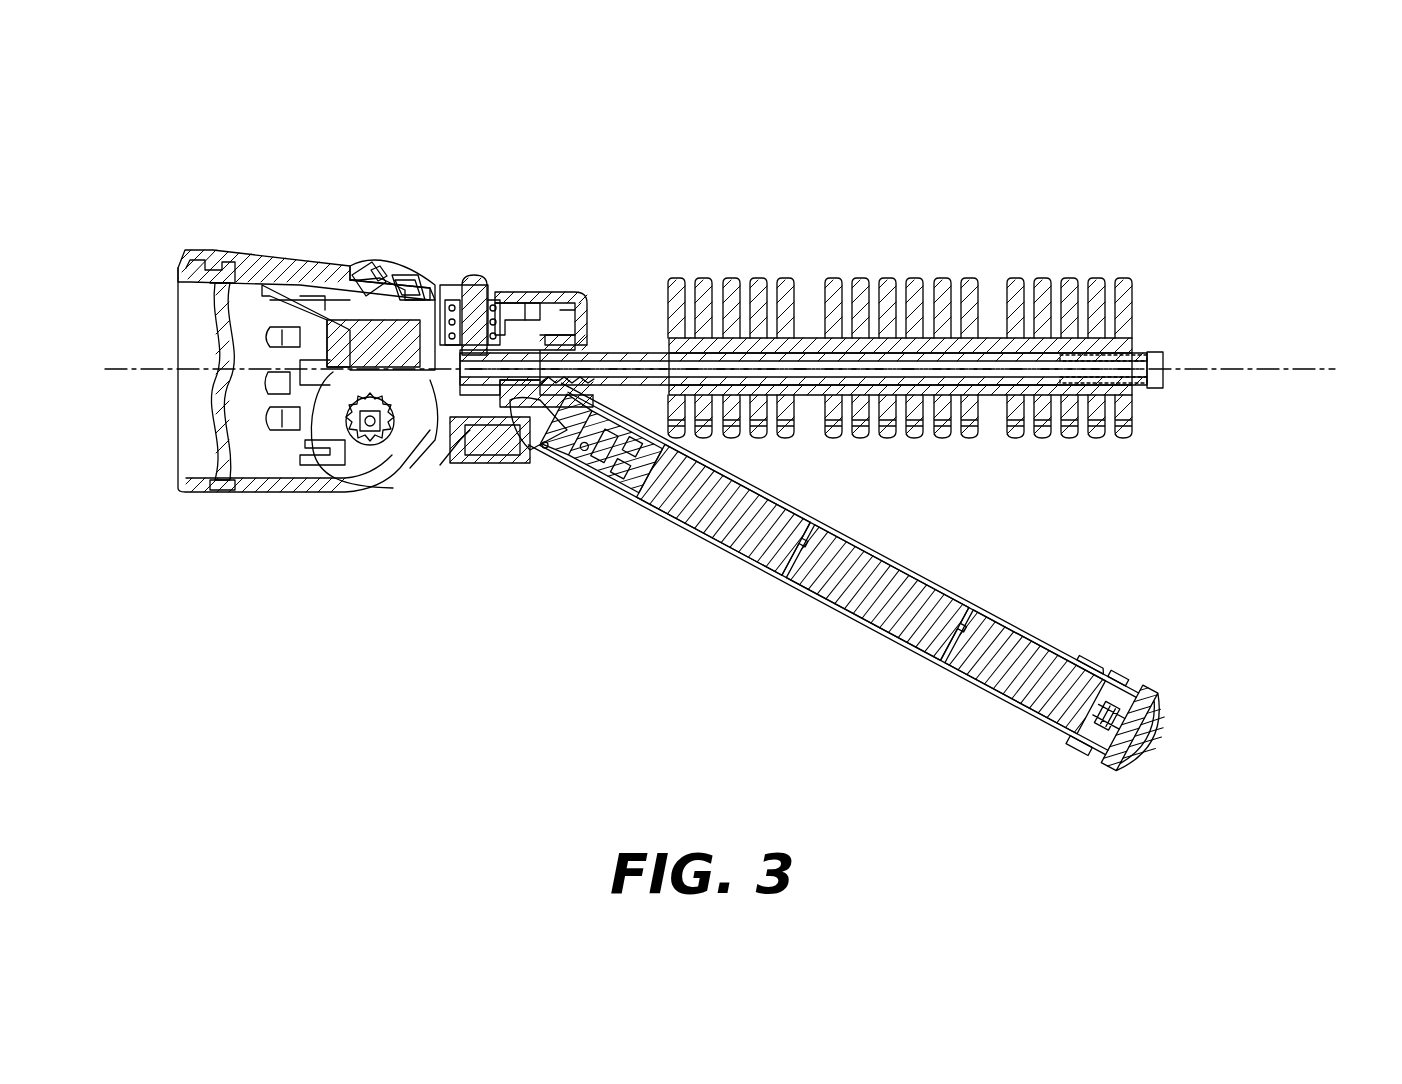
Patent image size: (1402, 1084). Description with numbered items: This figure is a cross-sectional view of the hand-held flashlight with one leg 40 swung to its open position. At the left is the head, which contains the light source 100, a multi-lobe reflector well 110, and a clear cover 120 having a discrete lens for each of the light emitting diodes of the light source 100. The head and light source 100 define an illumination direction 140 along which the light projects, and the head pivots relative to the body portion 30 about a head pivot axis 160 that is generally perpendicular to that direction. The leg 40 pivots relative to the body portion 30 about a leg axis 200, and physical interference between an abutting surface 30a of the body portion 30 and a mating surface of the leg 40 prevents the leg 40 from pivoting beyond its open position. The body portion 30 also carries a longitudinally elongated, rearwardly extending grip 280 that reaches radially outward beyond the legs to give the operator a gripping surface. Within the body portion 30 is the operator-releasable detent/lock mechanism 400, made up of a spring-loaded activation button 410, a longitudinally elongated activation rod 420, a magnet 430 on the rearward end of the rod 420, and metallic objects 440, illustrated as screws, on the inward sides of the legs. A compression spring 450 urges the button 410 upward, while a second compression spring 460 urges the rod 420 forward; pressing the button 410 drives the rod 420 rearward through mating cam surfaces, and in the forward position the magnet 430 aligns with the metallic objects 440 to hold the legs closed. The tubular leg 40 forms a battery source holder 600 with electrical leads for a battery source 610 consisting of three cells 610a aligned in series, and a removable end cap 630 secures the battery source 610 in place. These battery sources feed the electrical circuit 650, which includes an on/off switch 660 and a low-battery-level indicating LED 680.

The body portion 30 is at (545, 295).
The abutting surface of the body portion 30a is at (540, 455).
The leg 40 is at (851, 578).
The light source 100 is at (270, 340).
The reflector well 110 is at (255, 292).
The clear cover 120 is at (215, 318).
The illumination direction 140 is at (1300, 360).
The head pivot axis 160 is at (380, 430).
The leg axis 200 is at (555, 455).
The grip 280 is at (1130, 410).
The detent/lock mechanism 400 is at (500, 268).
The activation button 410 is at (472, 288).
The activation rod 420 is at (610, 360).
The magnet 430 is at (1153, 353).
The metallic objects 440 is at (1084, 705).
The compression spring 450 is at (495, 322).
The compression spring 460 is at (1085, 385).
The battery source holder 600 is at (1109, 716).
The battery source 610 is at (833, 568).
The cells 610a is at (871, 588).
The end cap 630 is at (1140, 733).
The electrical circuit 650 is at (330, 300).
The on/off switch 660 is at (405, 285).
The low-battery-level indicating LED 680 is at (365, 272).